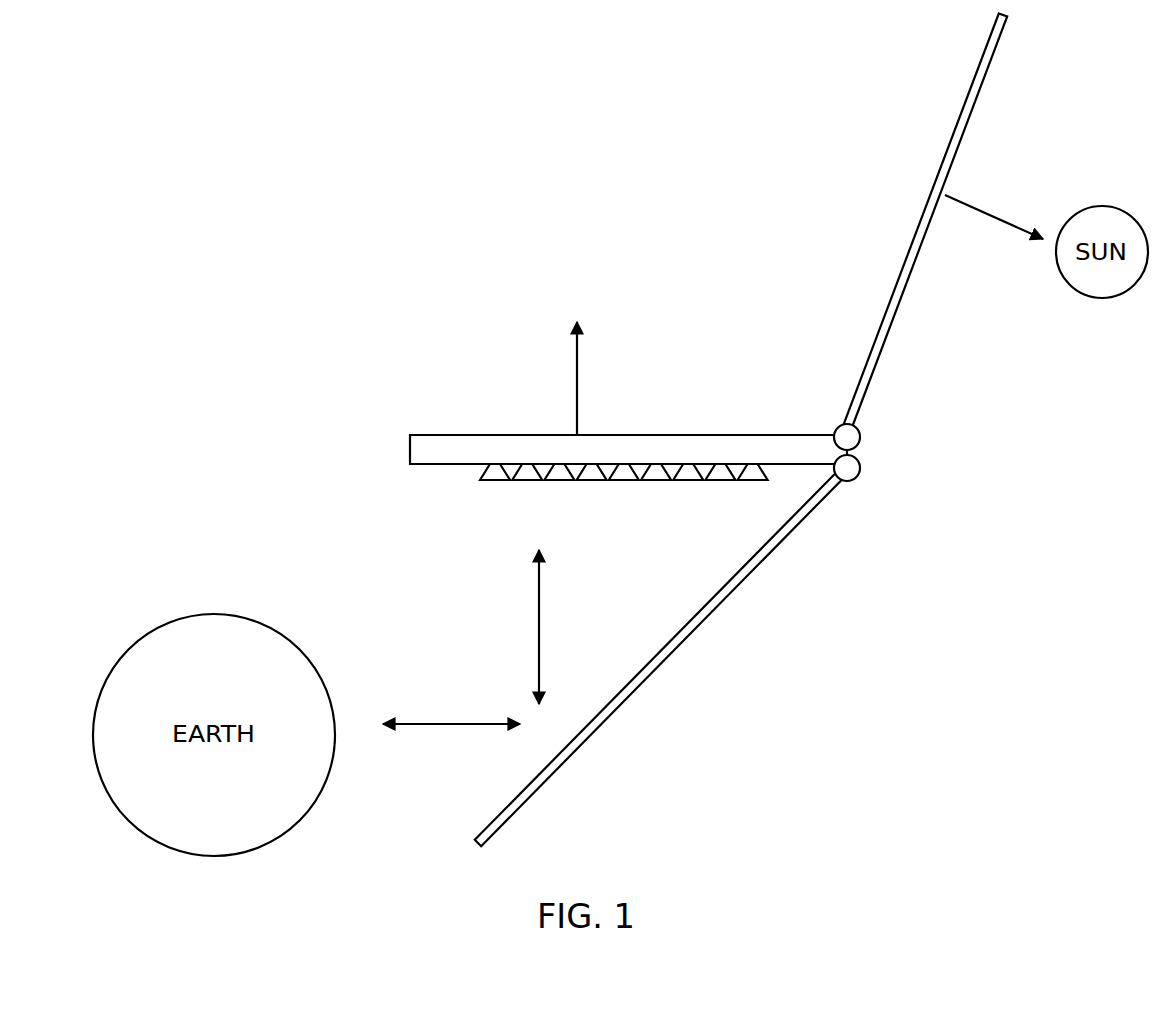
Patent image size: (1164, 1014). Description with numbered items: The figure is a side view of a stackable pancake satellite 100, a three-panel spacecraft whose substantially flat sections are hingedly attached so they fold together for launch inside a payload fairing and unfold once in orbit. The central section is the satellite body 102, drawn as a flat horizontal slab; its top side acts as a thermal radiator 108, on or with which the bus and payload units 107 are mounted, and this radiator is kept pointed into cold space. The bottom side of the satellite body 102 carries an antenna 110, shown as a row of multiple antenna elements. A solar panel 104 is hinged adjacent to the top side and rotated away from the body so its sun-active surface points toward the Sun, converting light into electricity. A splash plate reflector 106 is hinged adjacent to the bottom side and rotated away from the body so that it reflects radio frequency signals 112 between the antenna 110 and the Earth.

The stackable pancake satellite 100 is at (416, 187).
The satellite body 102 is at (410, 453).
The solar panel 104 is at (910, 255).
The splash plate reflector 106 is at (720, 605).
The bus and payload units 107 is at (738, 435).
The thermal radiator 108 is at (465, 435).
The antenna 110 is at (490, 480).
The signals 112 is at (461, 637).